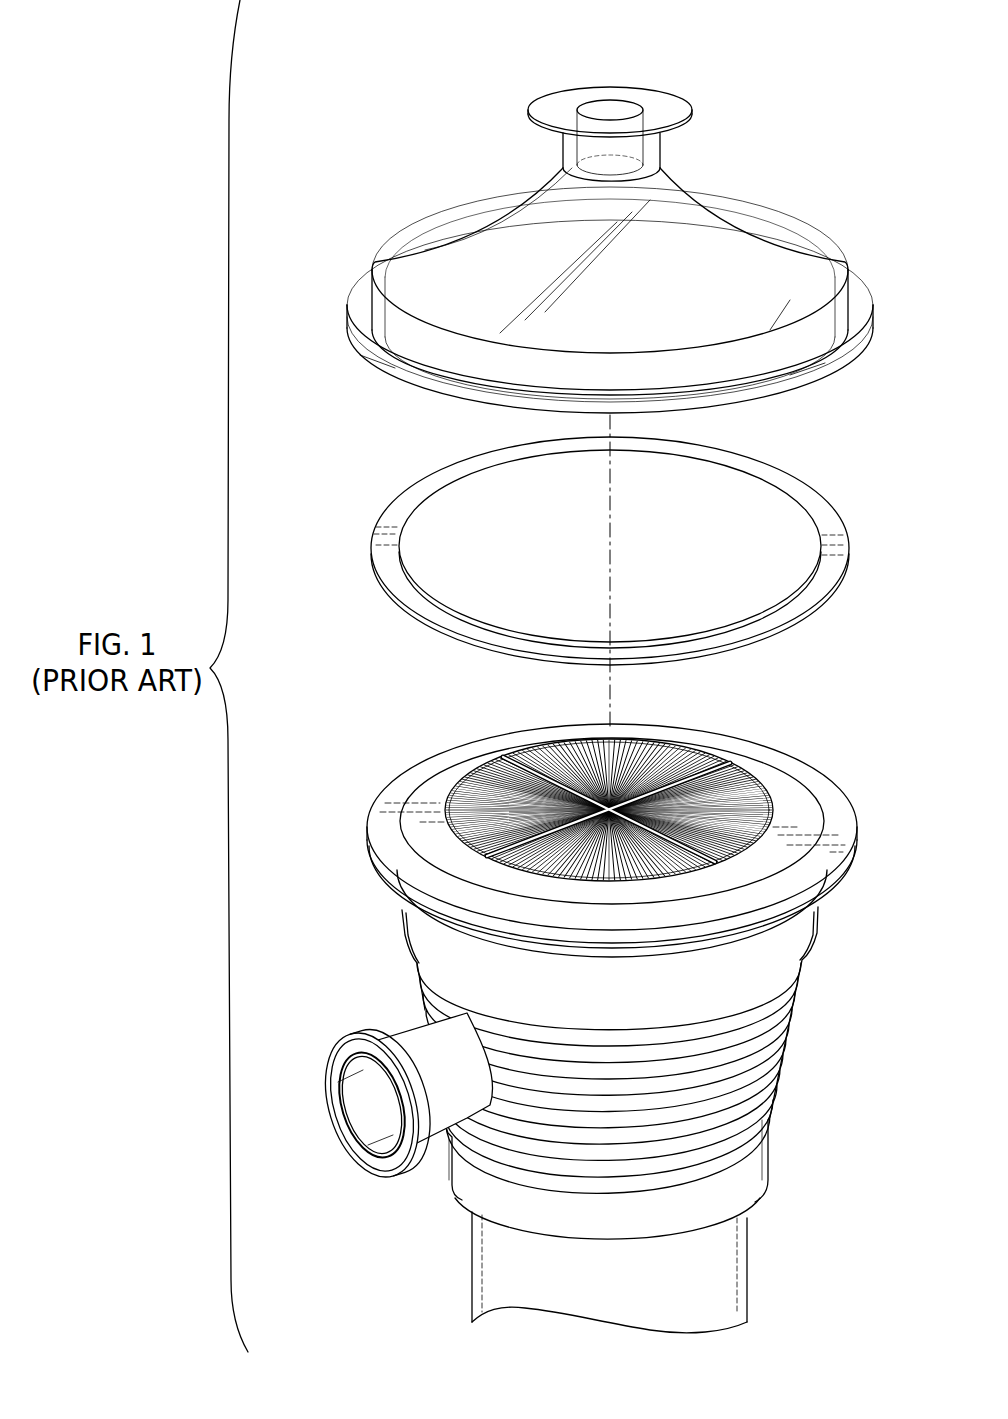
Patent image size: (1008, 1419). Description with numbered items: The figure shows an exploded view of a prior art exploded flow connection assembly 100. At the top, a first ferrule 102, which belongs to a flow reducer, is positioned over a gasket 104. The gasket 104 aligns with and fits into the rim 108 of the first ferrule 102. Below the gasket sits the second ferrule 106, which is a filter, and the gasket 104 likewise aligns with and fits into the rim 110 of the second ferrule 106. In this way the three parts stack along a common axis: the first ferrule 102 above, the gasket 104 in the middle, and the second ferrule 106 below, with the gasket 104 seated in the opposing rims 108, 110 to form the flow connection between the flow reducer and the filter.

The exploded flow connection assembly 100 is at (428, 80).
The first ferrule 102 is at (349, 300).
The gasket 104 is at (385, 515).
The second ferrule 106 is at (368, 866).
The rim 108 is at (823, 385).
The rim 110 is at (836, 818).